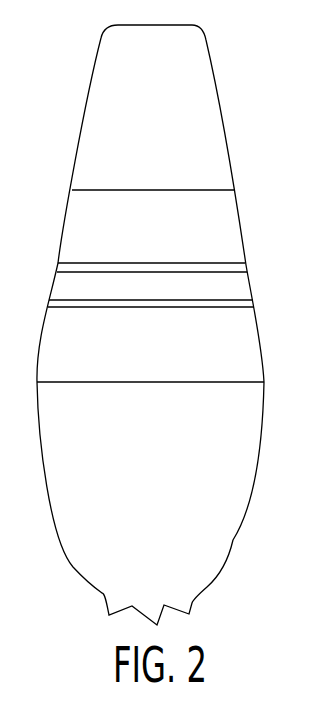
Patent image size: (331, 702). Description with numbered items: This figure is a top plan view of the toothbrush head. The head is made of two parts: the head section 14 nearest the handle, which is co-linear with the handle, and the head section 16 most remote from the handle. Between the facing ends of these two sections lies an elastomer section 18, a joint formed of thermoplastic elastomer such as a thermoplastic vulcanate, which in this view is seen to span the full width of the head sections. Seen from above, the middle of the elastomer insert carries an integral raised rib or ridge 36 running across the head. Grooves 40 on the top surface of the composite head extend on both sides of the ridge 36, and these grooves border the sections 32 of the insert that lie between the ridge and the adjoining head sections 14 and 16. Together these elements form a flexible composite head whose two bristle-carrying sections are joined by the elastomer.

The elastomer section 18 is at (265, 169).
The head section 16 is at (141, 103).
The sections 32 is at (140, 240).
The grooves 40 is at (77, 268).
The integral ridge 36 is at (63, 288).
The head section 14 is at (138, 474).